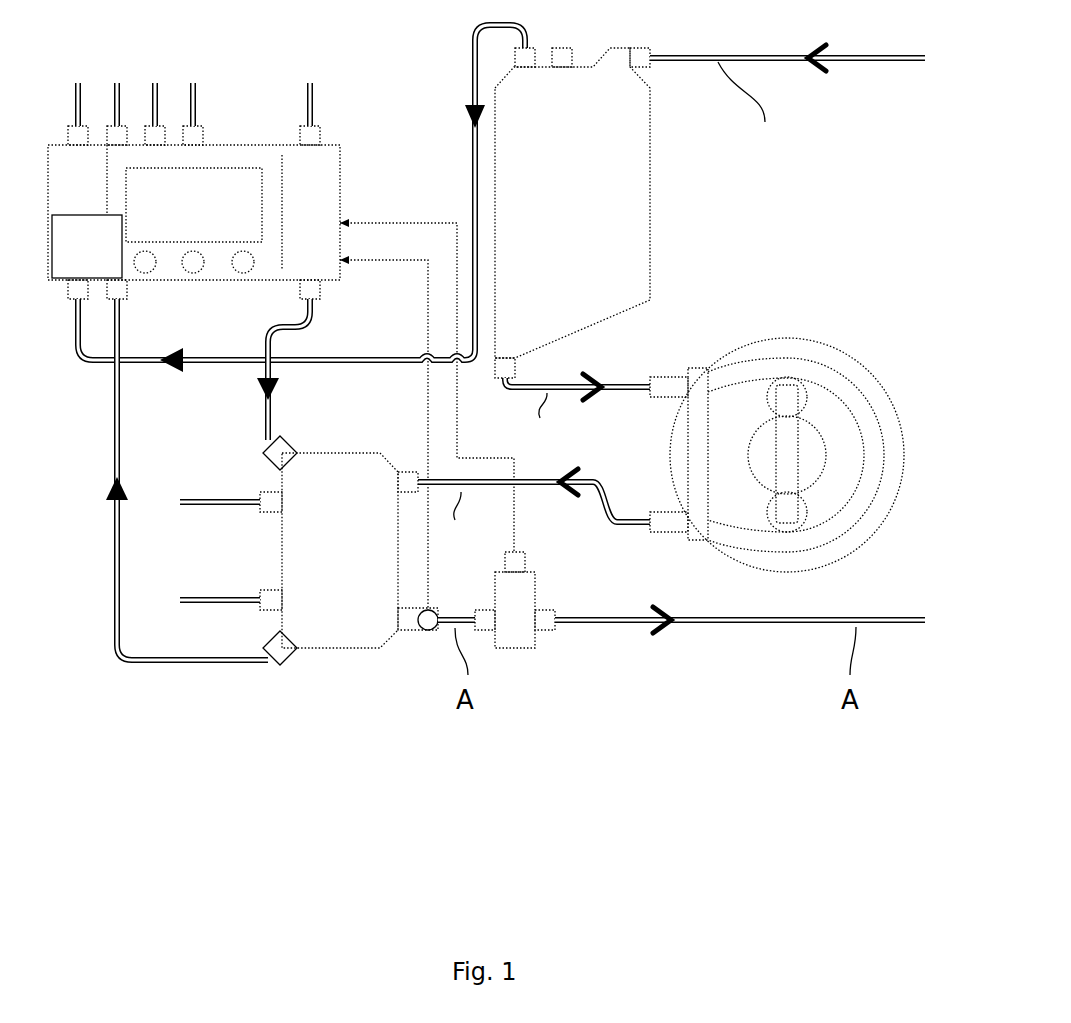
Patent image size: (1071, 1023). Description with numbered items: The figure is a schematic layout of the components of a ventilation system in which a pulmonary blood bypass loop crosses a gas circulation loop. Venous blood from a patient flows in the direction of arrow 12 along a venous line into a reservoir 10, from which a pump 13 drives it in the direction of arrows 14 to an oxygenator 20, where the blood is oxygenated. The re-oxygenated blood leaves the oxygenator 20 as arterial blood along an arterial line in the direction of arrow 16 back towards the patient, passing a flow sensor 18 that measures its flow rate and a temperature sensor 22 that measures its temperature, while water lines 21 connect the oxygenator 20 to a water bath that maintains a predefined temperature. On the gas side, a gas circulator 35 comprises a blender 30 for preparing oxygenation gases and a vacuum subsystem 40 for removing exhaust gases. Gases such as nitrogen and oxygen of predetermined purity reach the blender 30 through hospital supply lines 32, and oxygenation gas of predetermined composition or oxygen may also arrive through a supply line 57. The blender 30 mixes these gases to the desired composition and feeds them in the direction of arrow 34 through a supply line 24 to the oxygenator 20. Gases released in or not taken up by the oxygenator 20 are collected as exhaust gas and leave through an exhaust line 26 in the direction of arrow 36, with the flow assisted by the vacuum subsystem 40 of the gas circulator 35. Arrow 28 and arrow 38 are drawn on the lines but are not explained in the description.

The reservoir 10 is at (572, 213).
The arrow 12 is at (818, 68).
The pump 13 is at (835, 350).
The arrows 14 is at (603, 378).
The arrow 16 is at (680, 627).
The flow sensor 18 is at (525, 650).
The oxygenator 20 is at (339, 550).
The water lines 21 is at (185, 598).
The temperature sensor 22 is at (420, 633).
The supply line 24 is at (265, 420).
The exhaust line 26 is at (112, 575).
The supply line 28 is at (468, 152).
The blender 30 is at (281, 377).
The hospital supply lines 32 is at (215, 48).
The arrow 34 is at (283, 395).
The gas circulator 35 is at (49, 312).
The arrow 36 is at (110, 490).
The flow direction line 38 is at (170, 368).
The vacuum subsystem 40 is at (87, 246).
The supply line 57 is at (310, 83).